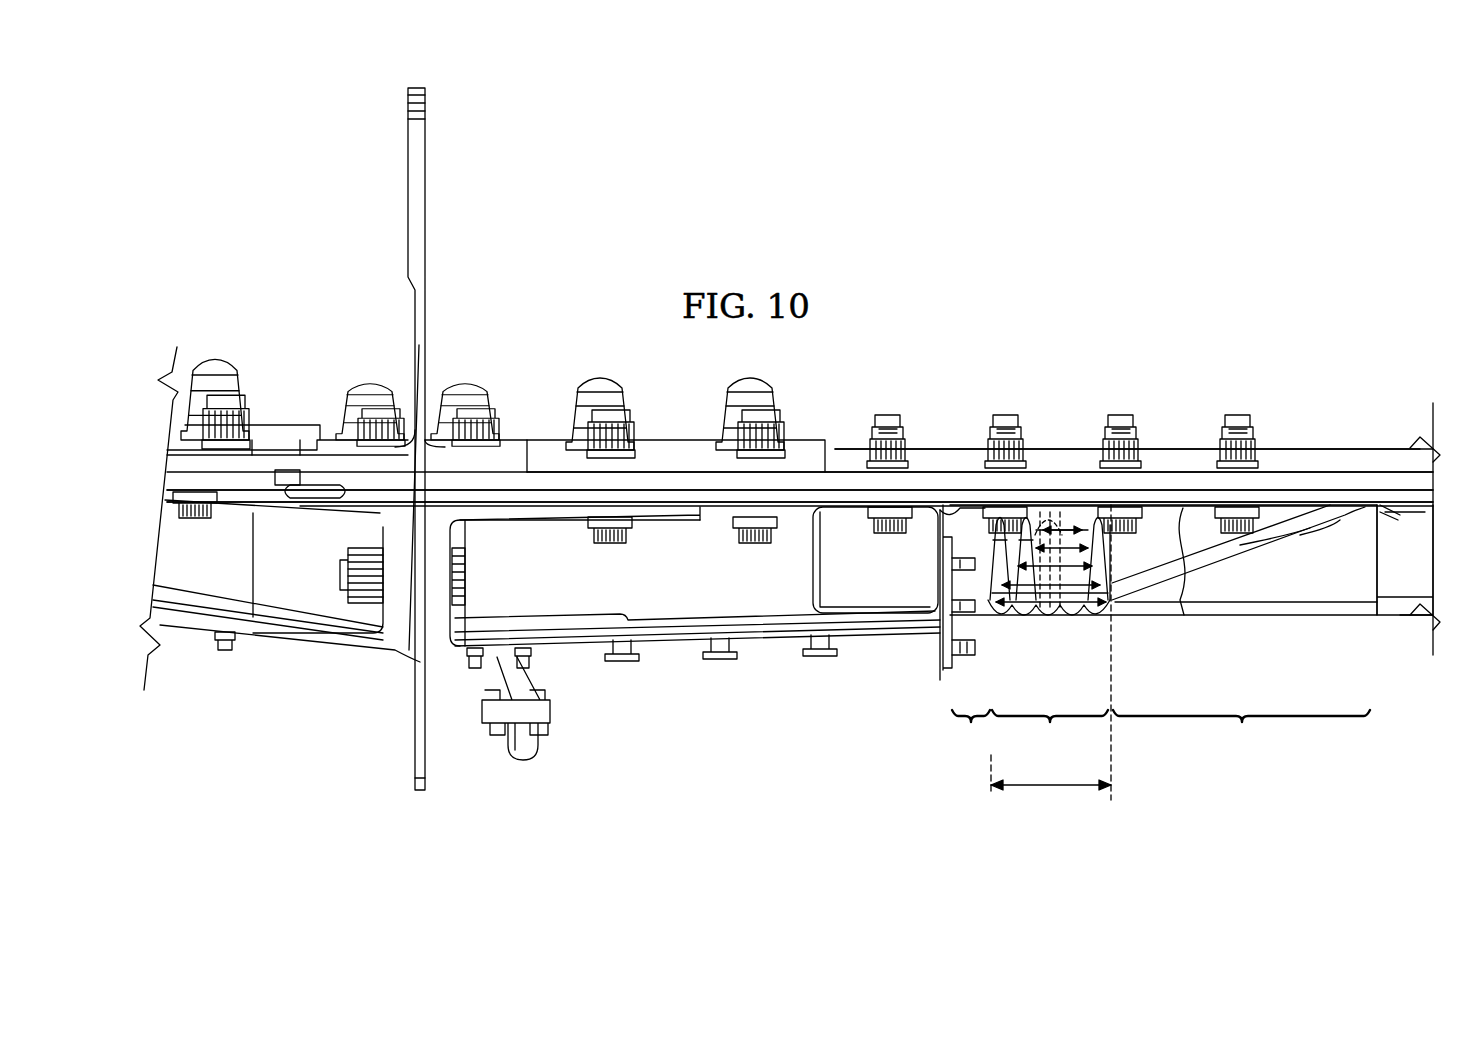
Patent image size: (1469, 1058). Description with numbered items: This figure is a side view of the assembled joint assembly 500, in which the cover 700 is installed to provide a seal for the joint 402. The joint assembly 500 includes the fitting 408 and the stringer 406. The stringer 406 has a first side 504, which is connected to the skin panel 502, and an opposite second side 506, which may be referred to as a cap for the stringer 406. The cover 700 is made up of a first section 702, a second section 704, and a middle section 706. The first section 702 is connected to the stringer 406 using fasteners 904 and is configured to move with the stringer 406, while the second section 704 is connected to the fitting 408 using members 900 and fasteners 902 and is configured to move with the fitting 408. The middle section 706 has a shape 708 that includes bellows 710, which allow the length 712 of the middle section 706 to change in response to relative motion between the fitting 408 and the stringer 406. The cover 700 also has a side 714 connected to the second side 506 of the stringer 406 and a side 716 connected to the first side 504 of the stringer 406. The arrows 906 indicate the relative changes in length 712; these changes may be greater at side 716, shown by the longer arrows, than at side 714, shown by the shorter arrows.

The joint assembly 500 is at (1275, 378).
The fasteners 904 is at (1125, 408).
The joint 402 is at (1172, 422).
The skin panel 502 is at (1300, 480).
The first side 504 is at (1395, 510).
The stringer 406 is at (1385, 572).
The second side 506 is at (1395, 627).
The cover 700 is at (1318, 615).
The side 716 is at (1246, 616).
The side 714 is at (1184, 615).
The fitting 408 is at (835, 571).
The fasteners 902 is at (940, 652).
The members 900 is at (960, 672).
The bellows 710 is at (1023, 612).
The arrows 906 is at (1050, 612).
The shape 708 is at (1083, 620).
The second section 704 is at (967, 732).
The middle section 706 is at (1050, 732).
The first section 702 is at (1241, 732).
The length 712 is at (1050, 788).